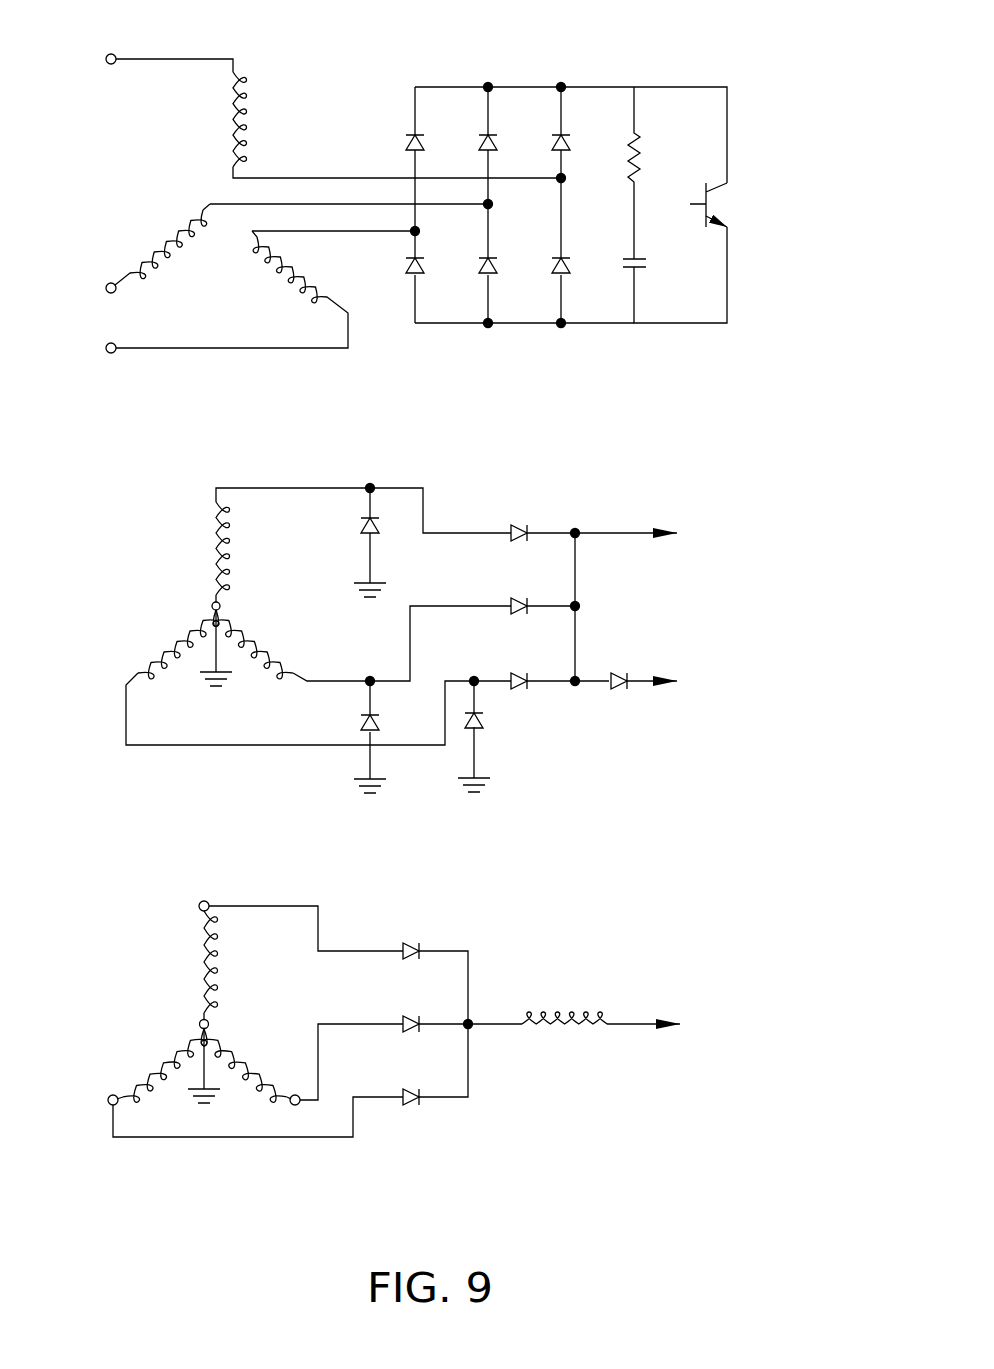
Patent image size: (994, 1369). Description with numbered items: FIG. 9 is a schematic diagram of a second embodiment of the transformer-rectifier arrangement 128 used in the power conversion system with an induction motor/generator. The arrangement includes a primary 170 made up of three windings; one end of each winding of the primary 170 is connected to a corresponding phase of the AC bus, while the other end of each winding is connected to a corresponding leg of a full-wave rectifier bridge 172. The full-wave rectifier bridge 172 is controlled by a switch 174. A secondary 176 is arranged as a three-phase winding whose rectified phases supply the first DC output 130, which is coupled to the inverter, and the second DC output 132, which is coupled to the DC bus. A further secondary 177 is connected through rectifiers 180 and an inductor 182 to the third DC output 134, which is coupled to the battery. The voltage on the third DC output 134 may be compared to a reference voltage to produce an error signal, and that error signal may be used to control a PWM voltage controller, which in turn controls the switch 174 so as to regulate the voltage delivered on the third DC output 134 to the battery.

The transformer-rectifier arrangement 128 is at (728, 161).
The first DC output 130 is at (608, 530).
The second DC output 132 is at (637, 673).
The third DC output 134 is at (670, 1029).
The primary 170 is at (282, 118).
The full-wave rectifier bridge 172 is at (523, 63).
The switch 174 is at (745, 207).
The secondary 176 is at (173, 597).
The secondary 177 is at (162, 1018).
The rectifiers 180 is at (410, 1118).
The inductor 182 is at (568, 1030).